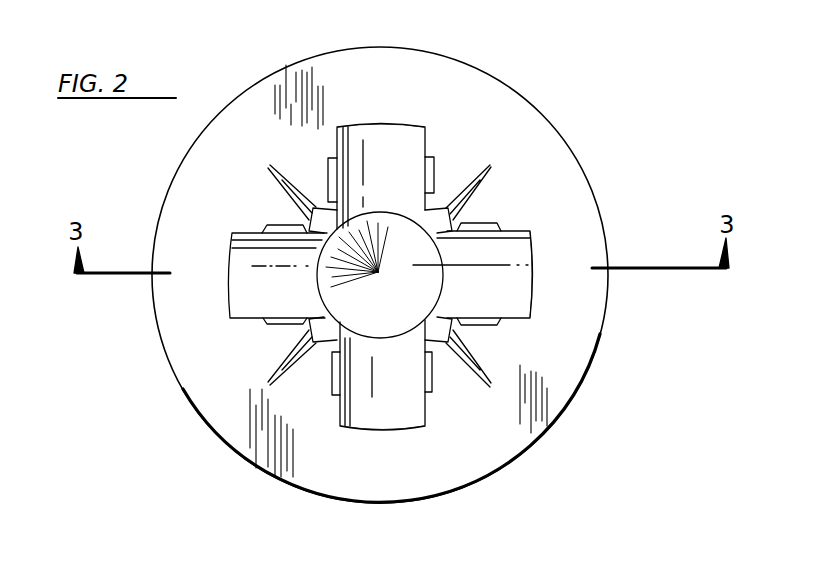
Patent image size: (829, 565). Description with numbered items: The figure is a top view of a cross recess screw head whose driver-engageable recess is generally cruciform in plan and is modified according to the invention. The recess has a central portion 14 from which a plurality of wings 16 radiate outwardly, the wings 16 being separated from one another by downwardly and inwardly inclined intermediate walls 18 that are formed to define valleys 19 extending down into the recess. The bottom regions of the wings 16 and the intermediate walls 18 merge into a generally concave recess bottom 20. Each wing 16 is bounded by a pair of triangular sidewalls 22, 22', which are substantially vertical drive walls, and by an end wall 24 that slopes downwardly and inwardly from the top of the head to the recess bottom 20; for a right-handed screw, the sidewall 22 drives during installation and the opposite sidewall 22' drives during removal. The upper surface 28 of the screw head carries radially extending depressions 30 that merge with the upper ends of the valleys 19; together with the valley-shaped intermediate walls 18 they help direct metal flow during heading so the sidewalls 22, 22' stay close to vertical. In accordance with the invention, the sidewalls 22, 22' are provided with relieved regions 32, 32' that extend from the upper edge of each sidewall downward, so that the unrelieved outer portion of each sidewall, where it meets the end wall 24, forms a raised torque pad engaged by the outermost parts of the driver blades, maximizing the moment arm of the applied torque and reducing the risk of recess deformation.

The central portion 14 is at (405, 285).
The wings 16 is at (365, 133).
The intermediate walls 18 is at (426, 232).
The valleys 19 is at (440, 348).
The recess bottom 20 is at (497, 228).
The sidewall 22 is at (386, 273).
The sidewall 22' is at (365, 298).
The end wall 24 is at (388, 163).
The upper surface 28 is at (517, 118).
The depressions 30 is at (478, 188).
The relieved region 32 is at (259, 214).
The relieved region 32' is at (237, 315).